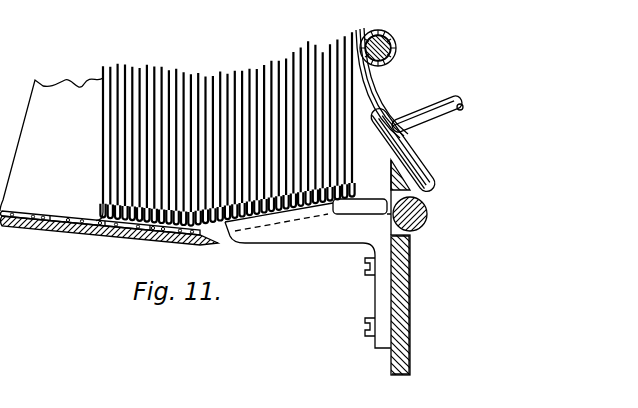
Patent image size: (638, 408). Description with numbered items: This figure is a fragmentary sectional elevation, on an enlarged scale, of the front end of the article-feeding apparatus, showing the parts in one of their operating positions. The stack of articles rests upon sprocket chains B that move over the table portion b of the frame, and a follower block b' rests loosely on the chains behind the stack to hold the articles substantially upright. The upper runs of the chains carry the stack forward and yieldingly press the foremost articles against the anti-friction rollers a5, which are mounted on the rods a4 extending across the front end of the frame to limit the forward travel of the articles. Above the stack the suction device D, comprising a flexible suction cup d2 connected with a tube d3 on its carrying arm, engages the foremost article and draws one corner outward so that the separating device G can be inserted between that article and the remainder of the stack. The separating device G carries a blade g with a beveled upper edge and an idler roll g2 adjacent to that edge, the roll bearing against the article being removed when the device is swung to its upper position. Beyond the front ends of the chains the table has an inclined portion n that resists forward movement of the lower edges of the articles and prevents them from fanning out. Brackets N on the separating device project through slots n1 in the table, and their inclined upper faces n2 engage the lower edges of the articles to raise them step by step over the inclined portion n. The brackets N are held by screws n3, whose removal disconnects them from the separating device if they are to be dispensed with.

The anti-friction rollers a5 is at (388, 36).
The rods a4 is at (397, 50).
The tube d3 is at (437, 117).
The suction device D is at (430, 165).
The suction cup d2 is at (432, 176).
The idler roll g2 is at (427, 221).
The separating device G is at (412, 267).
The blade g is at (398, 318).
The screws n3 is at (363, 322).
The slots n1 is at (358, 200).
The brackets N is at (308, 275).
The inclined upper faces n2 is at (270, 217).
The inclined portion n is at (228, 257).
The table portion b is at (110, 239).
The sprocket chains B is at (66, 218).
The follower block b' is at (51, 149).